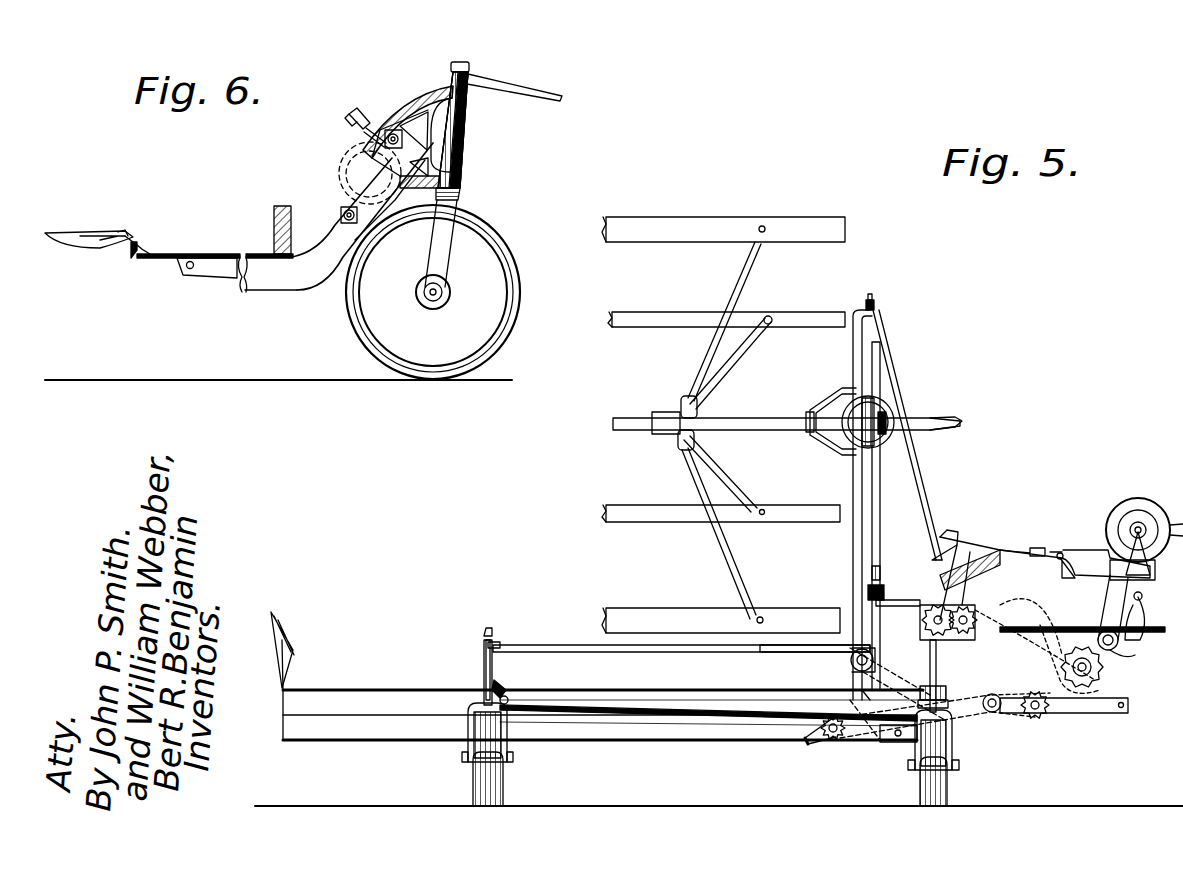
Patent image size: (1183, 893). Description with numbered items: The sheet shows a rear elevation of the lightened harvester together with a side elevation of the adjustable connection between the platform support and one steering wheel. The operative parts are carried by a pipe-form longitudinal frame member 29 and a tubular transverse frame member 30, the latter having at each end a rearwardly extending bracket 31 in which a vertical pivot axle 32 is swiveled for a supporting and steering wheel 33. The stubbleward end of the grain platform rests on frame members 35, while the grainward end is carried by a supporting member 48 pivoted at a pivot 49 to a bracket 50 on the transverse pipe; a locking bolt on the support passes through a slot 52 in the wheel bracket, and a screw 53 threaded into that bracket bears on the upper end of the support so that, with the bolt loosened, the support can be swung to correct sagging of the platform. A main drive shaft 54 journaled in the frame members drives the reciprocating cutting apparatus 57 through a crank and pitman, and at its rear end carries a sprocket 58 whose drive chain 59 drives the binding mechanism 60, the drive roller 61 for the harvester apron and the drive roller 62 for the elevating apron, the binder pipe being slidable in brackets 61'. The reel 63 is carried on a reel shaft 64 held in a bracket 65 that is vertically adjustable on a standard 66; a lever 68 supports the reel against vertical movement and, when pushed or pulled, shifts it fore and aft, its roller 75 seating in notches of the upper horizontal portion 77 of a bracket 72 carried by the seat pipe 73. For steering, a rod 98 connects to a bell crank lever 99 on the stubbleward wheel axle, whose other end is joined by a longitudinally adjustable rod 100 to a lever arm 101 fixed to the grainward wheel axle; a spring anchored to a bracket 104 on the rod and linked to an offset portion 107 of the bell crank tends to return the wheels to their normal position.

In FIG. 5, the longitudinal frame member 29 is at (895, 740).
In FIG. 6, the transverse frame member 30 is at (458, 196).
In FIG. 5, the transverse frame member 30 is at (668, 720).
In FIG. 6, the rearwardly extending bracket 31 is at (460, 170).
In FIG. 5, the rearwardly extending bracket 31 is at (508, 690).
In FIG. 6, the vertical pivot axle 32 is at (468, 130).
In FIG. 5, the vertical pivot axle 32 is at (482, 662).
In FIG. 6, the supporting and steering wheel 33 is at (492, 235).
In FIG. 5, the supporting and steering wheel 33 is at (476, 778).
In FIG. 5, the frame member 35 is at (1116, 712).
In FIG. 6, the supporting member 48 is at (246, 282).
In FIG. 6, the pivot 49 is at (340, 210).
In FIG. 6, the bracket 50 is at (345, 172).
In FIG. 5, the bracket 50 is at (485, 668).
In FIG. 6, the slot 52 is at (415, 90).
In FIG. 6, the screw 53 is at (360, 112).
In FIG. 6, the main drive shaft 54 is at (390, 128).
In FIG. 5, the main drive shaft 54 is at (1045, 712).
In FIG. 6, the reciprocating cutting apparatus 57 is at (103, 232).
In FIG. 5, the sprocket 58 is at (1030, 692).
In FIG. 5, the drive chain 59 is at (995, 714).
In FIG. 5, the binding mechanism 60 is at (1135, 640).
In FIG. 5, the drive roller for harvester apron 61 is at (897, 709).
In FIG. 5, the bracket 61' is at (1086, 624).
In FIG. 5, the drive roller for elevating apron 62 is at (960, 580).
In FIG. 5, the reel 63 is at (697, 222).
In FIG. 5, the reel shaft 64 is at (740, 418).
In FIG. 5, the bracket 65 is at (830, 414).
In FIG. 5, the standard 66 is at (862, 326).
In FIG. 5, the lever 68 is at (925, 416).
In FIG. 5, the bracket 72 is at (888, 520).
In FIG. 5, the seat pipe 73 is at (862, 602).
In FIG. 5, the roller 75 is at (887, 418).
In FIG. 5, the upper horizontal portion 77 is at (890, 430).
In FIG. 5, the rod 98 is at (855, 664).
In FIG. 5, the bell crank lever 99 is at (958, 612).
In FIG. 5, the longitudinally adjustable rod 100 is at (585, 620).
In FIG. 6, the lever arm 101 is at (548, 70).
In FIG. 5, the lever arm 101 is at (492, 640).
In FIG. 5, the bracket 104 is at (800, 654).
In FIG. 5, the offset portion 107 is at (1068, 609).